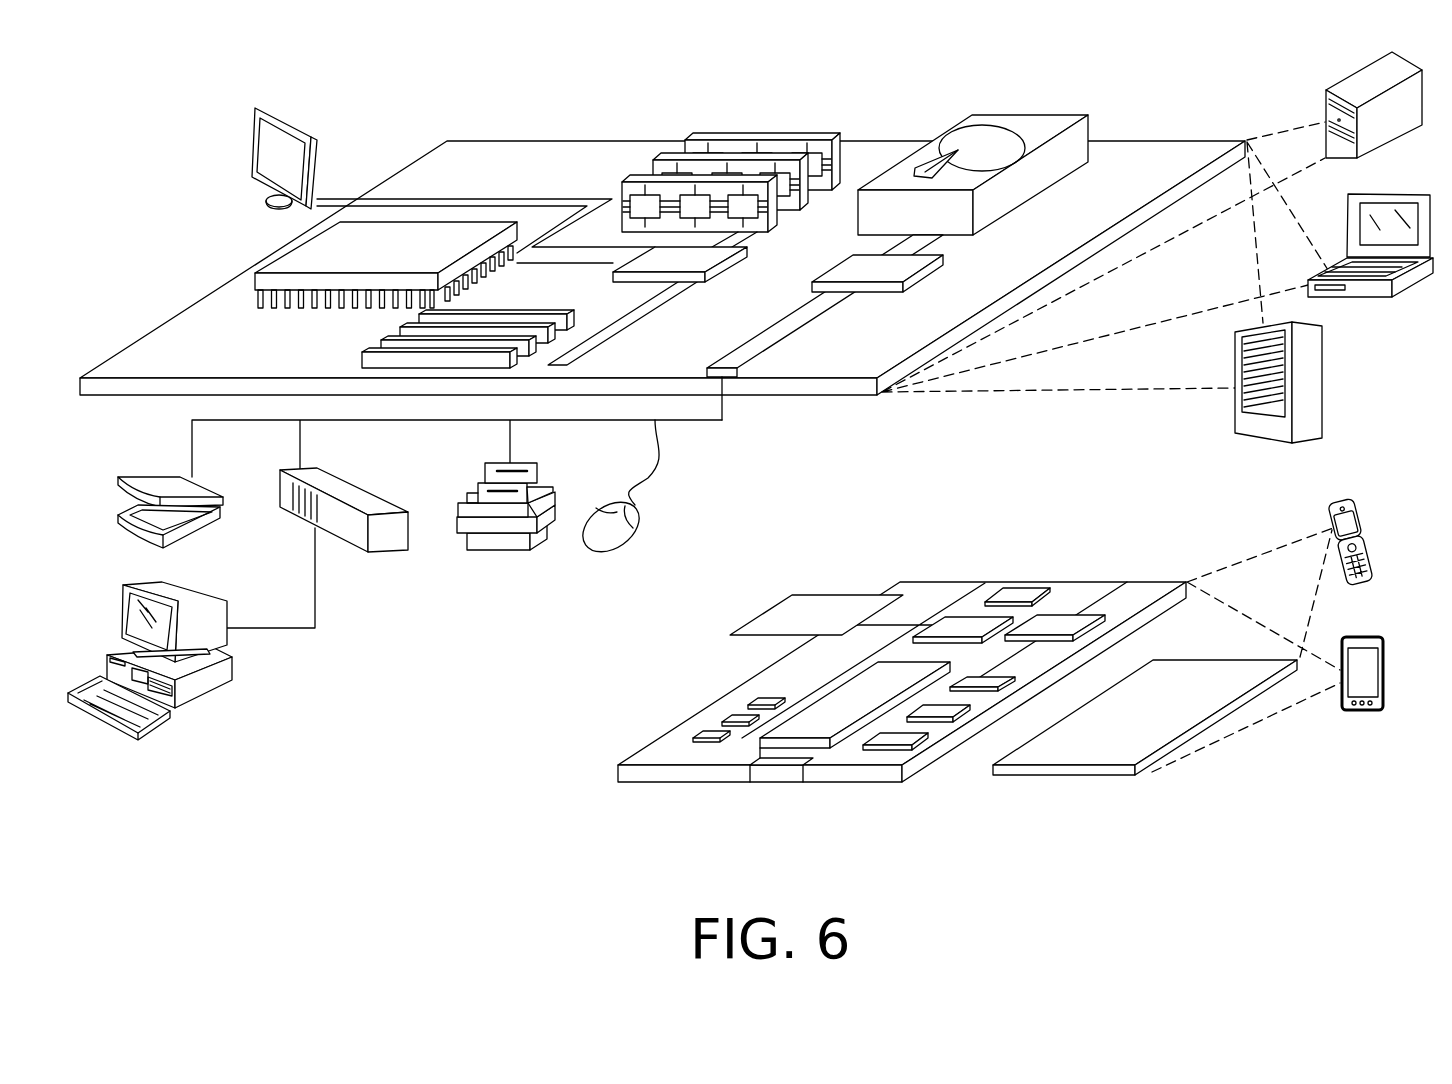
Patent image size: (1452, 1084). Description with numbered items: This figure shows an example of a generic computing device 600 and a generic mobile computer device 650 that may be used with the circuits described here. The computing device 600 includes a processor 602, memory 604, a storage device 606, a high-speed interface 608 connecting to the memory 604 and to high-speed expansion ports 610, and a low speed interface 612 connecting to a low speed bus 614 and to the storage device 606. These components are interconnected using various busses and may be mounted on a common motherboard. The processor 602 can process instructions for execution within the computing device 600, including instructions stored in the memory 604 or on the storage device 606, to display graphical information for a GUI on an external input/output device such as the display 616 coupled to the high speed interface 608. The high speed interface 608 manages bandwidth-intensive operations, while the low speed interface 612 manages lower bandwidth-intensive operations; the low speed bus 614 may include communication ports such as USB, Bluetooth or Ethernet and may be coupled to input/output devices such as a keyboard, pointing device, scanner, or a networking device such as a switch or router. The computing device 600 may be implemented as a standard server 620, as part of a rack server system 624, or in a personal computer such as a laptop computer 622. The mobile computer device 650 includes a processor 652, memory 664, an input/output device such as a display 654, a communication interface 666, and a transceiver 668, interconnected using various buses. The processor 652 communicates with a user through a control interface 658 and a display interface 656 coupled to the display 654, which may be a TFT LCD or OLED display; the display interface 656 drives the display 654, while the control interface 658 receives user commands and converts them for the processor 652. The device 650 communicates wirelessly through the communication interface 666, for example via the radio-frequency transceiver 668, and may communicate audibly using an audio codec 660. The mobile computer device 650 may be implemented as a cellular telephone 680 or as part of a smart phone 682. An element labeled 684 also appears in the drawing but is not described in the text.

The computing device 600 is at (392, 78).
The processor 602 is at (283, 252).
The memory 604 is at (768, 133).
The storage device 606 is at (1018, 112).
The high-speed interface 608 is at (693, 258).
The high-speed expansion ports 610 is at (392, 337).
The low speed interface 612 is at (852, 264).
The low speed bus 614 is at (726, 363).
The display 616 is at (256, 108).
The standard server 620 is at (1348, 82).
The laptop computer 622 is at (1408, 194).
The rack server system 624 is at (1322, 382).
The mobile computer device 650 is at (1231, 778).
The processor 652 is at (820, 712).
The display 654 is at (1187, 678).
The display interface 656 is at (915, 740).
The control interface 658 is at (946, 710).
The audio codec 660 is at (986, 678).
The memory 664 is at (727, 720).
The communication interface 666 is at (965, 617).
The transceiver 668 is at (1062, 620).
The cellular telephone 680 is at (1020, 596).
The smart phone 682 is at (882, 596).
The battery 684 is at (790, 596).